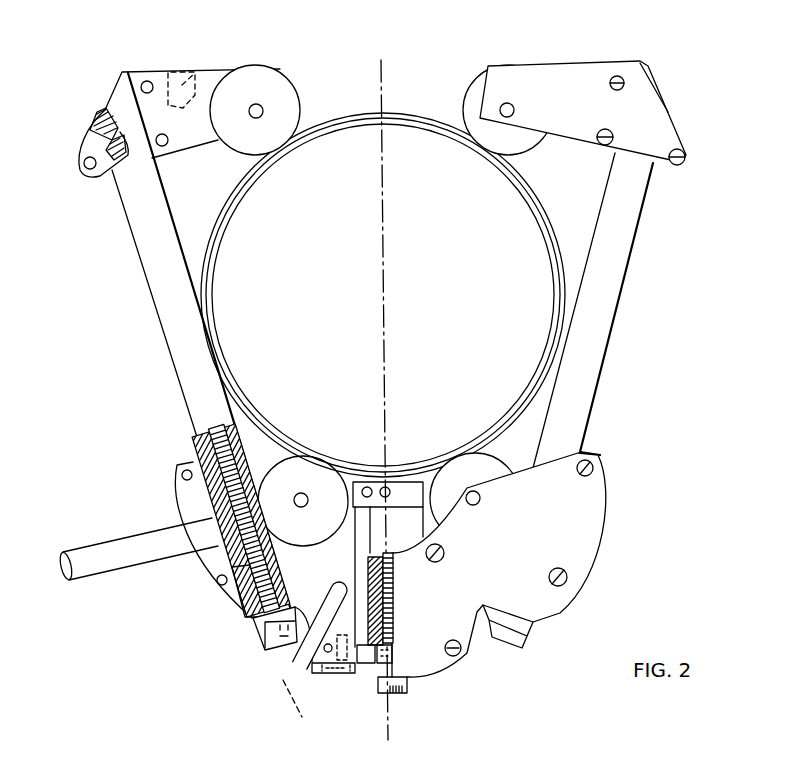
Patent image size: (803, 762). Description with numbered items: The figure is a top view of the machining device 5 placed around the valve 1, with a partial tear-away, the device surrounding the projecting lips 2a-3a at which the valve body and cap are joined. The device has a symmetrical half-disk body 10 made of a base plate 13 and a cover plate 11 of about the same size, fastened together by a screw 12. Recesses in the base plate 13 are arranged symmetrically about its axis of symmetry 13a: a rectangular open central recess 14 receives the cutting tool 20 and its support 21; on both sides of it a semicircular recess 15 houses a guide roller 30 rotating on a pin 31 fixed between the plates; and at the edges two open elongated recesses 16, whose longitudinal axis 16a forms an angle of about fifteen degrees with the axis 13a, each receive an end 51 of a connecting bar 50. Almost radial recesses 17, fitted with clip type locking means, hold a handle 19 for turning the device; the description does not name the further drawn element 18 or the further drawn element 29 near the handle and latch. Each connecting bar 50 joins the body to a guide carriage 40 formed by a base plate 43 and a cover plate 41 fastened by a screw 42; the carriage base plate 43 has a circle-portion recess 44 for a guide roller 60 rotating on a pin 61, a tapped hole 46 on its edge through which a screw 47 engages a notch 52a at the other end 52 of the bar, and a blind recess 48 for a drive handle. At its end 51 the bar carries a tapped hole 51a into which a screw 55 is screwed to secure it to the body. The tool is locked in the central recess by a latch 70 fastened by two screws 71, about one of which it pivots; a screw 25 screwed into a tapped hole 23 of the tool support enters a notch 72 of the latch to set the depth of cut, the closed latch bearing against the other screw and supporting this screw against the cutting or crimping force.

The valve 1 is at (517, 262).
The projecting lips 2a-3a is at (402, 112).
The machining device 5 is at (400, 340).
The body 10 is at (566, 616).
The cover plate 11 is at (572, 547).
The screw 12 is at (597, 470).
The base plate 13 is at (312, 584).
The axis of symmetry 13a is at (385, 265).
The central recess 14 is at (360, 524).
The semicircular recess 15 is at (326, 526).
The elongated recess 16 is at (242, 583).
The longitudinal axis 16a is at (293, 695).
The recess 17 is at (213, 533).
The rod 18 is at (322, 618).
The handle 19 is at (110, 553).
The cutting tool 20 is at (398, 470).
The support 21 is at (408, 530).
The tapped hole 23 is at (392, 567).
The screw 25 is at (390, 613).
The bracket 29 is at (403, 692).
The guide roller 30 is at (290, 467).
The pin 31 is at (296, 507).
The guide carriage 40 is at (376, 127).
The cover plate 41 is at (491, 100).
The screw 42 is at (670, 142).
The base plate 43 is at (188, 130).
The recess 44 is at (255, 110).
The tapped hole 46 is at (85, 163).
The screw 47 is at (100, 127).
The blind recess 48 is at (197, 73).
The connecting bar 50 is at (147, 242).
The end 51 is at (230, 550).
The tapped hole 51a is at (191, 540).
The other end 52 is at (143, 177).
The notch 52a is at (118, 140).
The screw 55 is at (268, 641).
The guide roller 60 is at (296, 102).
The pin 61 is at (262, 114).
The latch 70 is at (365, 670).
The screw 71 is at (316, 668).
The notch 72 is at (387, 663).